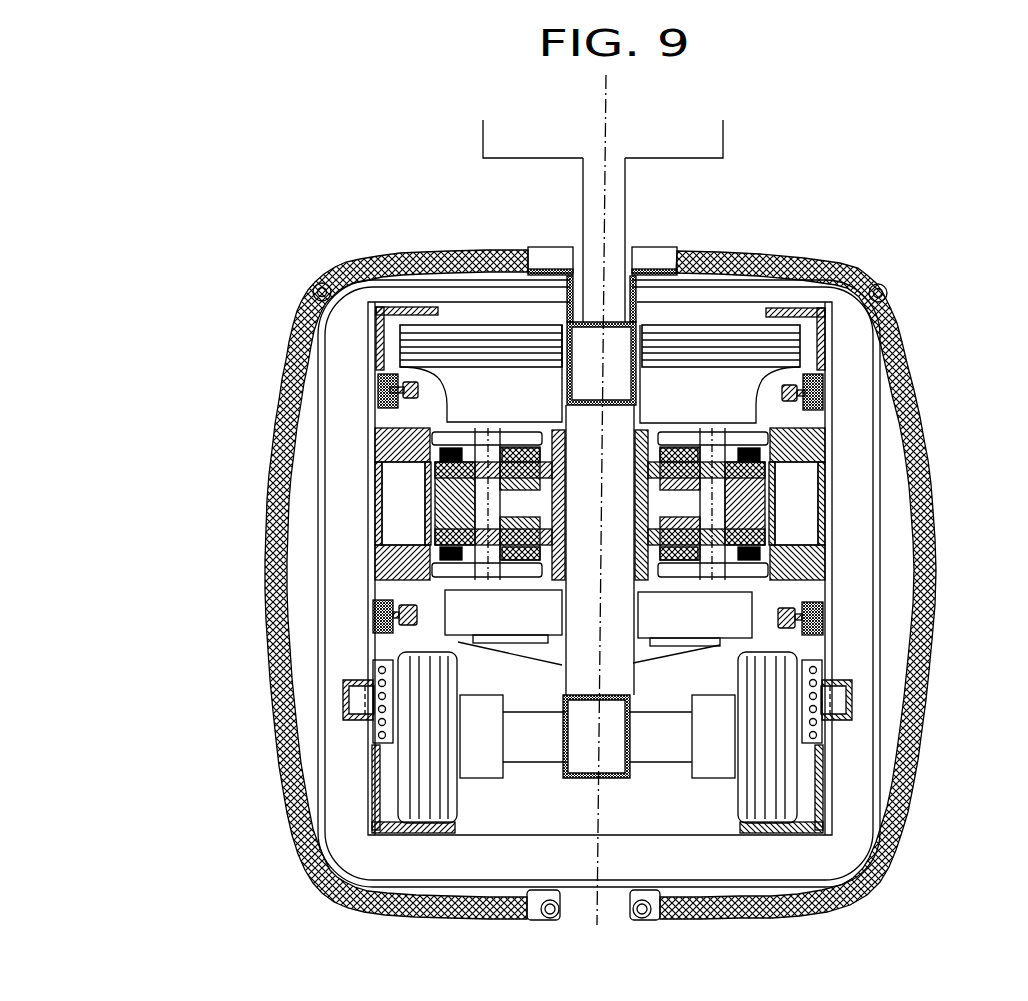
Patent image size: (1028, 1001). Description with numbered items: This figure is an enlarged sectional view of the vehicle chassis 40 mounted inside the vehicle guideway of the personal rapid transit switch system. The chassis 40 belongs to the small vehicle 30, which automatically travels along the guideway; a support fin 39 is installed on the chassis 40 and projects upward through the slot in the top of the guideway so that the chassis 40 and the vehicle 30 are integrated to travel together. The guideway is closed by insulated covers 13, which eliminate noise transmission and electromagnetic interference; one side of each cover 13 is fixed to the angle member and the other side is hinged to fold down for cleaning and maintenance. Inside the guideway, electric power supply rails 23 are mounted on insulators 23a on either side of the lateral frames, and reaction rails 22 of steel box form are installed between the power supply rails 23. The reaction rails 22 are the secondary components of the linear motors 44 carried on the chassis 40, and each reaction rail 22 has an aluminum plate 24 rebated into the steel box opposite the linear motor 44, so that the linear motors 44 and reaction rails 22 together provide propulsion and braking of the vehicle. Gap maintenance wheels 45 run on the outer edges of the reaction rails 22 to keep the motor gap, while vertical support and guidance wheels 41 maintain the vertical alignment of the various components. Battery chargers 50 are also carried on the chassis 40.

The covers 13 is at (276, 775).
The reaction rails 22 is at (370, 527).
The electric power supply rails 23 is at (407, 387).
The insulators 23a is at (387, 410).
The aluminum plate 24 is at (423, 492).
The small vehicle 30 is at (718, 133).
The support fin 39 is at (611, 204).
The vehicle chassis 40 is at (626, 784).
The vertical support and guidance wheels 41 is at (410, 793).
The linear motor 44 is at (386, 541).
The gap maintenance wheels 45 is at (445, 436).
The battery chargers 50 is at (458, 630).